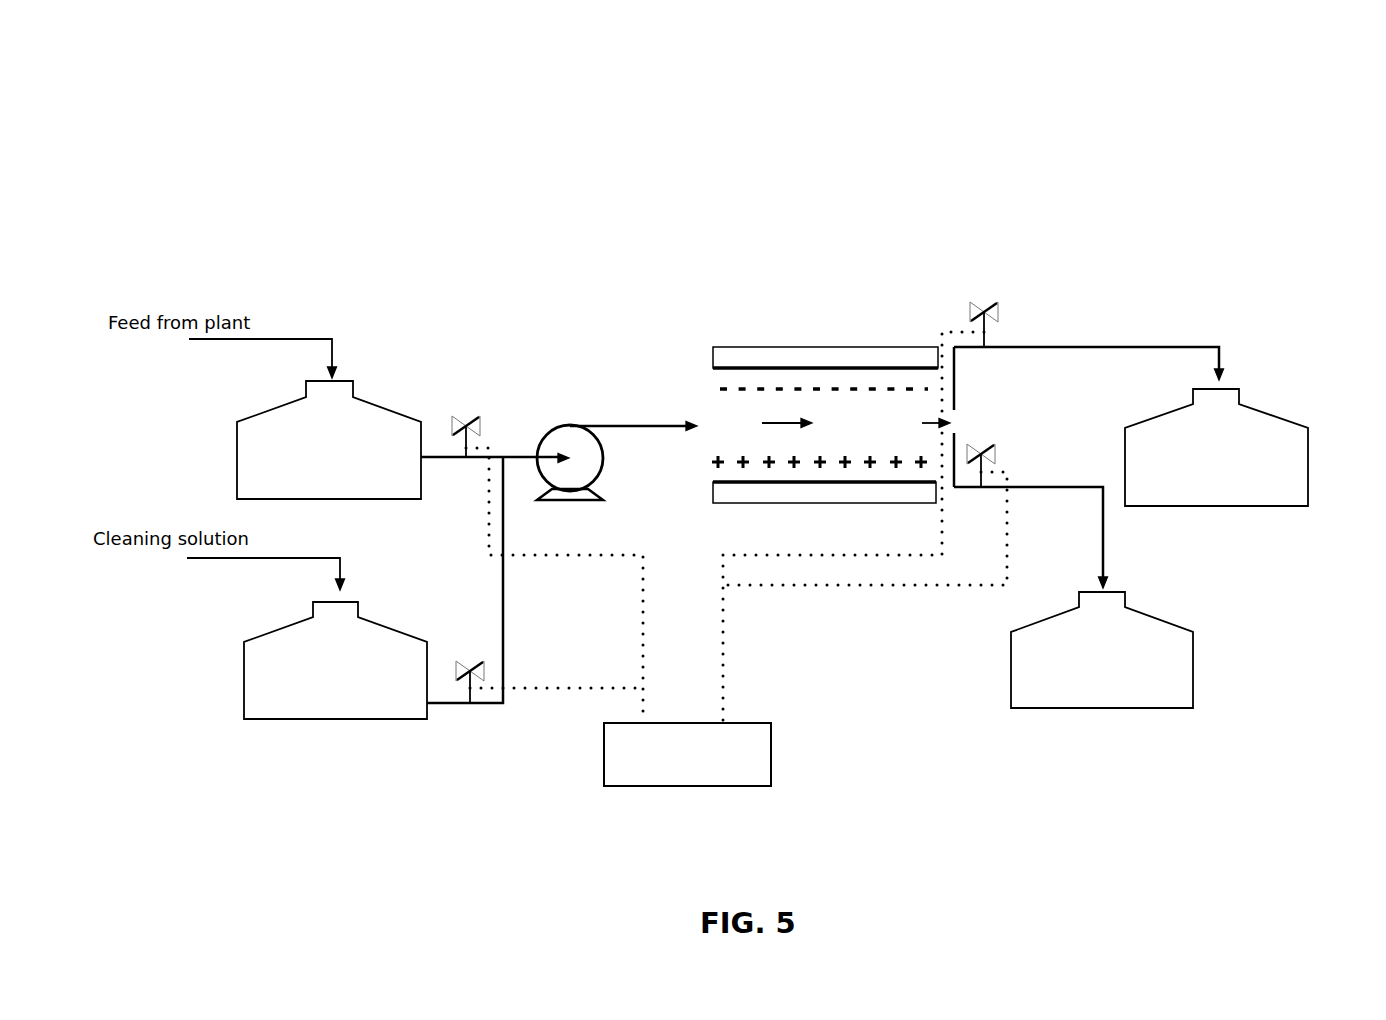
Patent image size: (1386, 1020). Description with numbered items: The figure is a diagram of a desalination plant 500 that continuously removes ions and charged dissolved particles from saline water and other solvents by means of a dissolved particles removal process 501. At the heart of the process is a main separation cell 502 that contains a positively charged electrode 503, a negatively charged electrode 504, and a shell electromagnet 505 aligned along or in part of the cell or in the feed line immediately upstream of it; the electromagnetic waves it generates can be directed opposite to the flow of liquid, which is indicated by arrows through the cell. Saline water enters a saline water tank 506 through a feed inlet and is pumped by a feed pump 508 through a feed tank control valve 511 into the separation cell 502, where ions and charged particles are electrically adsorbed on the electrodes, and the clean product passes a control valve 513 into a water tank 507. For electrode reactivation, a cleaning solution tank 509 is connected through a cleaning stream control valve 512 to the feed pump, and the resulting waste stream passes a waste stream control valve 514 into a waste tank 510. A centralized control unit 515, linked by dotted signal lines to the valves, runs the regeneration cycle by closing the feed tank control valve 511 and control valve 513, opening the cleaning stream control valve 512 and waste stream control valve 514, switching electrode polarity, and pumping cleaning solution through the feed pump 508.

The desalination plant 500 is at (765, 34).
The dissolved particles removal process 501 is at (343, 196).
The separation cell 502 is at (805, 407).
The positively charged electrode 503 is at (703, 482).
The negatively charged electrode 504 is at (703, 368).
The shell electromagnet 505 is at (784, 341).
The saline water tank 506 is at (251, 406).
The water tank 507 is at (1137, 408).
The feed pump 508 is at (535, 434).
The cleaning solution tank 509 is at (240, 634).
The waste tank 510 is at (1204, 642).
The feed tank control valve 511 is at (461, 404).
The cleaning stream control valve 512 is at (466, 648).
The control valve 513 is at (981, 295).
The waste stream control valve 514 is at (990, 437).
The centralized control unit 515 is at (788, 758).